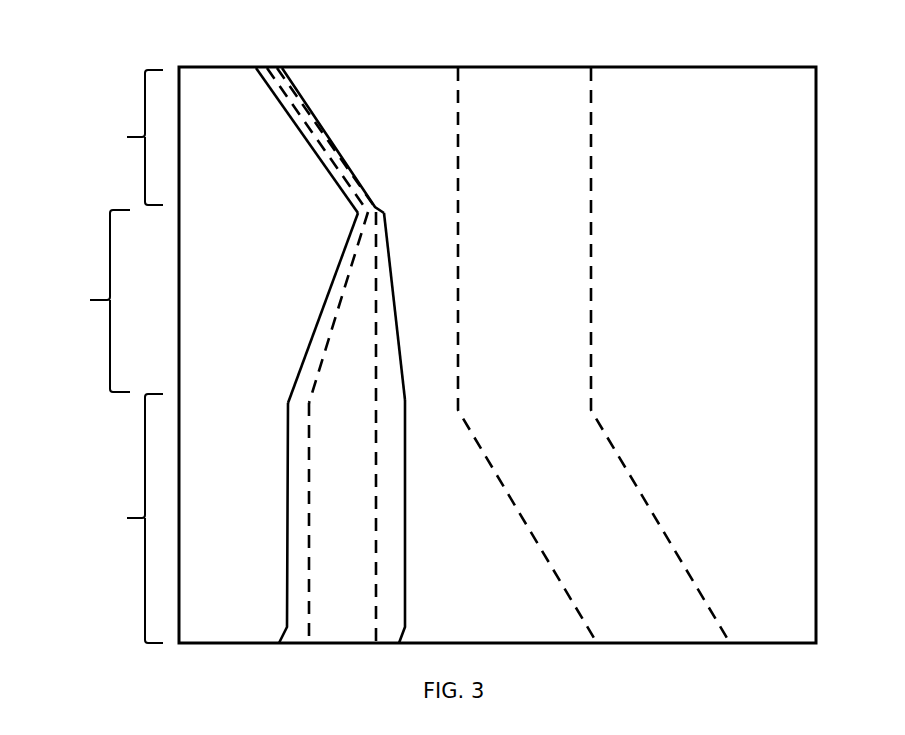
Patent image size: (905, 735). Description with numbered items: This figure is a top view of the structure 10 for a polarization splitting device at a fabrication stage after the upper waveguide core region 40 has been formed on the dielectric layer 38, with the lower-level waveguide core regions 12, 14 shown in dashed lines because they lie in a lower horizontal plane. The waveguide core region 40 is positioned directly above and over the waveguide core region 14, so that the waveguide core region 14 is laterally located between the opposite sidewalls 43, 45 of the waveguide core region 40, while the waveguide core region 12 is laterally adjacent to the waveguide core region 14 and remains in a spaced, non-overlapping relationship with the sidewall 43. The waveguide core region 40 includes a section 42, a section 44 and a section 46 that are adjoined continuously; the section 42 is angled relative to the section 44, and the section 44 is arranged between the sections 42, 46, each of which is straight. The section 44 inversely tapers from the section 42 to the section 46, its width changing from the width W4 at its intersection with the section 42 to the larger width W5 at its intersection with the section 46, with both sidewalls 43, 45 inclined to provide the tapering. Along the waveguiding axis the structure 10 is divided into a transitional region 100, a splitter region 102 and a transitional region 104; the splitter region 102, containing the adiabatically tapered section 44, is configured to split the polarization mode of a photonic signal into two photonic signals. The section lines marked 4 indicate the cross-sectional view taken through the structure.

The structure 10 is at (128, 76).
The transitional region 100 is at (120, 137).
The splitter region 102 is at (87, 301).
The transitional region 104 is at (121, 518).
The section 42 is at (317, 155).
The width W4 is at (298, 208).
The waveguide core region 40 is at (323, 257).
The sidewall 45 is at (298, 369).
The sidewall 43 is at (398, 315).
The section 44 is at (387, 368).
The section 46 is at (387, 563).
The waveguide core region 14 is at (300, 521).
The width W5 is at (240, 471).
The waveguide core region 12 is at (614, 398).
The dielectric layer 38 is at (792, 344).
The section line 4- 4 is at (257, 340).